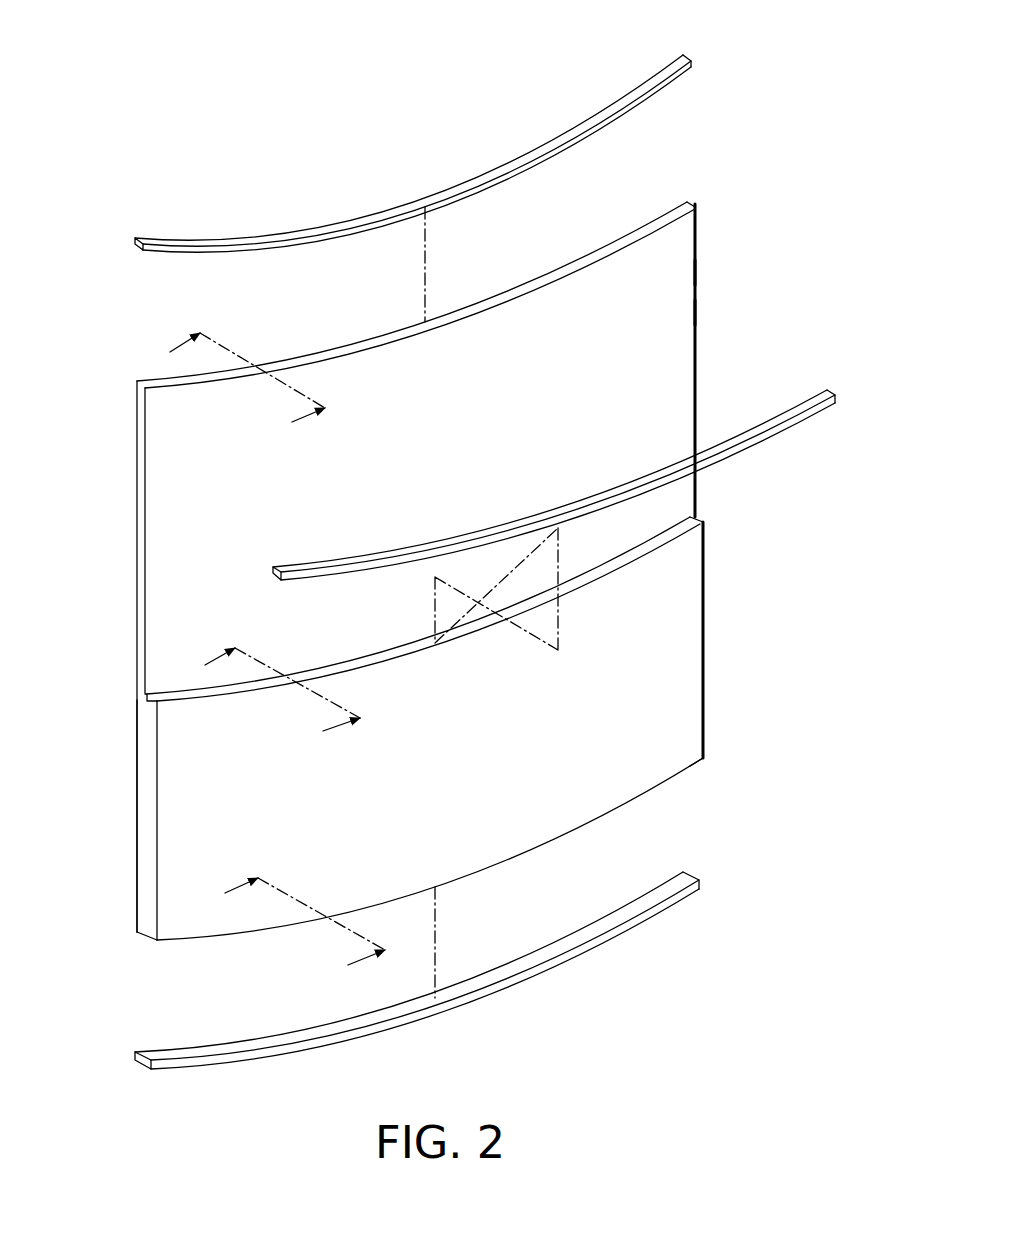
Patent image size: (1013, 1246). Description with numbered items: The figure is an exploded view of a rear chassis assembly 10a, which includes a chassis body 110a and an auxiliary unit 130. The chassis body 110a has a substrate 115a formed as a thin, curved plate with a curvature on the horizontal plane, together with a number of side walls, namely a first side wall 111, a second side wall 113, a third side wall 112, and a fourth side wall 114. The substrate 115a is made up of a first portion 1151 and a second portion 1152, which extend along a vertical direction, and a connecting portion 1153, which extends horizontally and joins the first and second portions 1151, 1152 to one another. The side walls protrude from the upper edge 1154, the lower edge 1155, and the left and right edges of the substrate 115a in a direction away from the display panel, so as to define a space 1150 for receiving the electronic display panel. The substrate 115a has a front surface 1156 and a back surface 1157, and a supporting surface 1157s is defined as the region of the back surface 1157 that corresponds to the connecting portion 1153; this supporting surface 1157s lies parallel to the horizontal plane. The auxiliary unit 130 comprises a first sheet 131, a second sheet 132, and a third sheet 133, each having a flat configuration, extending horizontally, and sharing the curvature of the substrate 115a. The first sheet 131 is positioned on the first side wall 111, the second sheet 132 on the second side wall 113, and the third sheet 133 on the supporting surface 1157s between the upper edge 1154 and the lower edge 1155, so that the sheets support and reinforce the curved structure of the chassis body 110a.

The rear chassis assembly 10a is at (100, 86).
The chassis body 110a is at (128, 429).
The first side wall 111 is at (478, 534).
The third side wall 112 is at (436, 728).
The second side wall 113 is at (640, 797).
The fourth side wall 114 is at (697, 355).
The substrate 115a is at (679, 272).
The space 1150 is at (357, 392).
The first portion 1151 is at (677, 311).
The second portion 1152 is at (693, 622).
The connecting portion 1153 is at (673, 541).
The upper edge 1154 is at (387, 348).
The lower edge 1155 is at (668, 778).
The front surface 1156 is at (178, 558).
The back surface 1157 is at (178, 568).
The supporting surface 1157s is at (165, 696).
The auxiliary unit 130 is at (413, 188).
The first sheet 131 is at (560, 143).
The second sheet 132 is at (625, 935).
The third sheet 133 is at (745, 455).